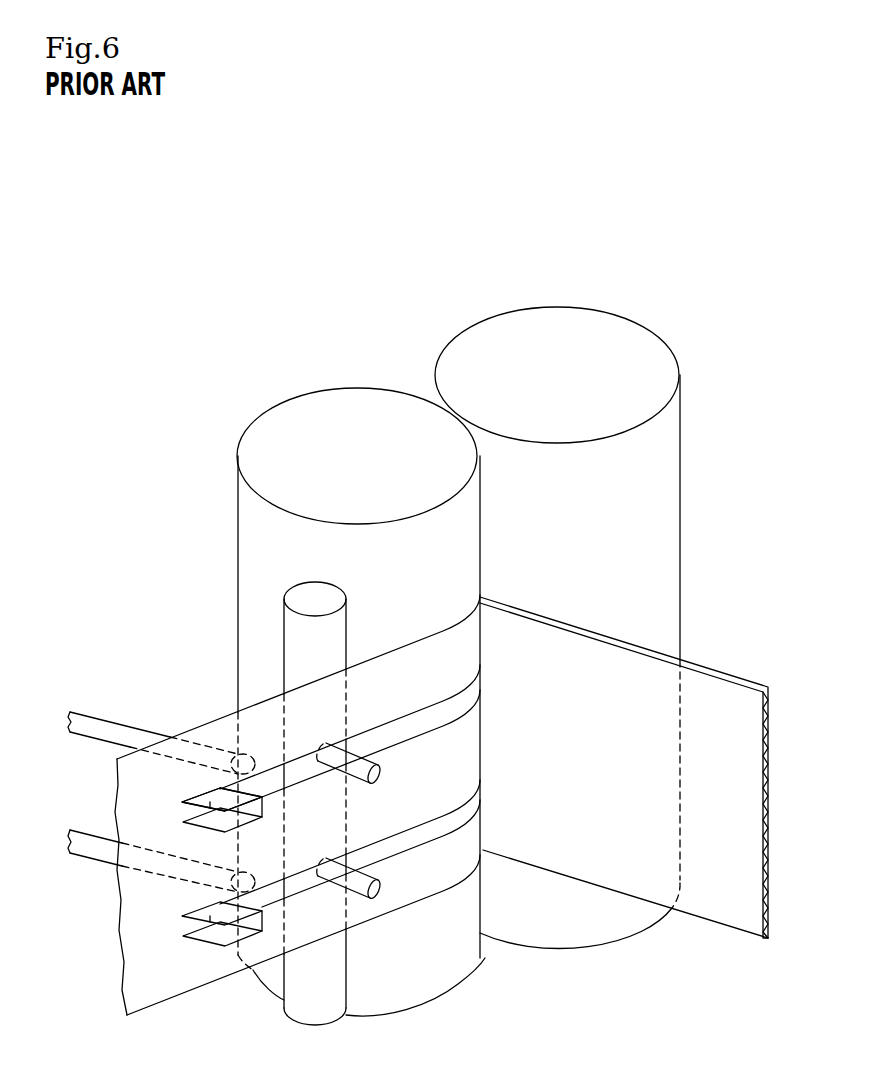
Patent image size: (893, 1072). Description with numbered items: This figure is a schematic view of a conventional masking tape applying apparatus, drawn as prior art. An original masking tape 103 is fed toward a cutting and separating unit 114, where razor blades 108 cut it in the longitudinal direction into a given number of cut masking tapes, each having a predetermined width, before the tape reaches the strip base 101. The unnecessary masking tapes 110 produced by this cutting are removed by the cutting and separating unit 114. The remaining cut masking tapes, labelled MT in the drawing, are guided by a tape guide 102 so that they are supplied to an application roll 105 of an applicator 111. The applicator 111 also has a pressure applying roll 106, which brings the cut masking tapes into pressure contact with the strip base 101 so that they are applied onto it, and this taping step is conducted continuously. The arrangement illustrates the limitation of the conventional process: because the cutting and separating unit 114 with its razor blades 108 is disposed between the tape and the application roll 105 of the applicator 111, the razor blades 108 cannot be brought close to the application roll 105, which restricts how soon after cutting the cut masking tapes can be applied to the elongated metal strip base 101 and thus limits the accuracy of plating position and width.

The strip base 101 is at (723, 687).
The tape guide 102 is at (290, 632).
The original masking tape 103 is at (173, 997).
The application roll 105 is at (320, 403).
The pressure applying roll 106 is at (587, 312).
The razor blades 108 is at (212, 792).
The unnecessary masking tapes 110 is at (103, 721).
The applicator 111 is at (693, 363).
The cutting and separating unit 114 is at (181, 718).
The magnetic tape MT is at (433, 897).